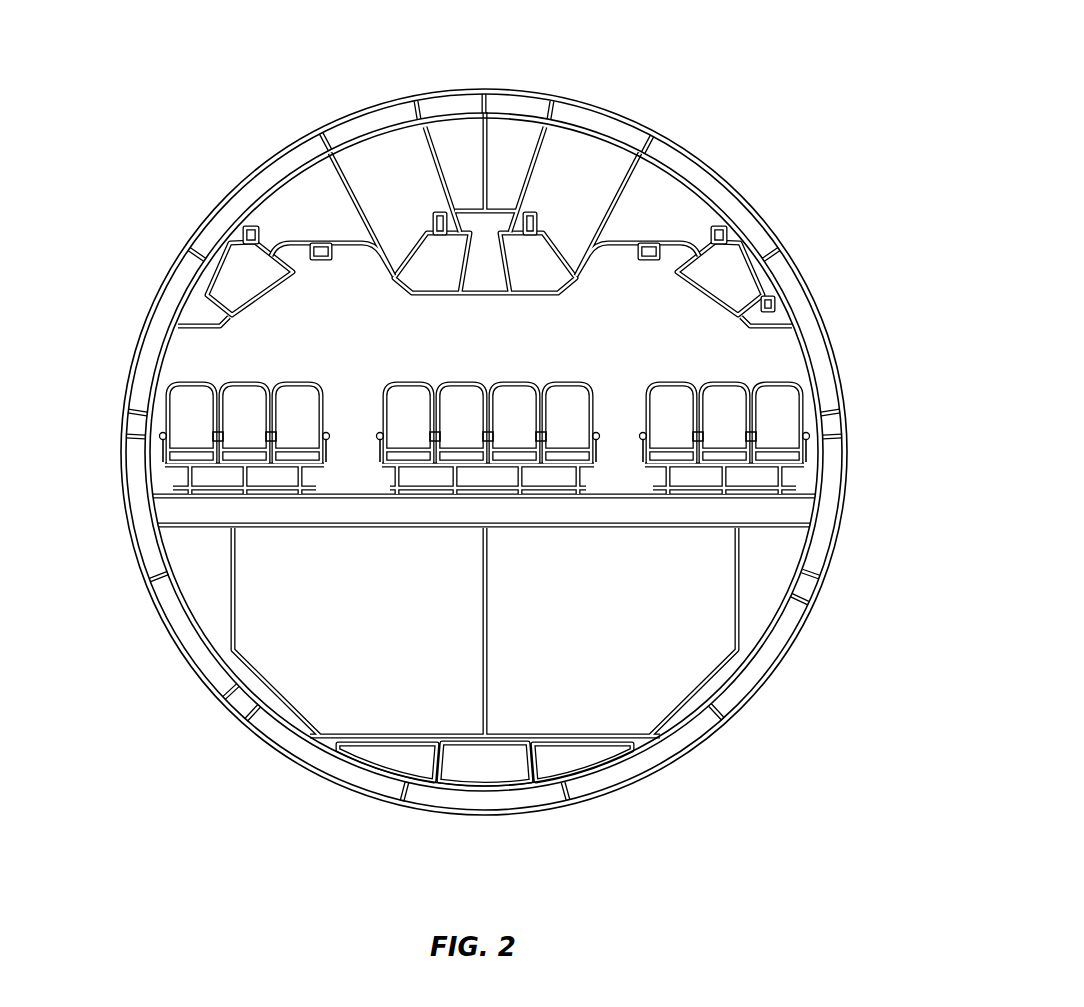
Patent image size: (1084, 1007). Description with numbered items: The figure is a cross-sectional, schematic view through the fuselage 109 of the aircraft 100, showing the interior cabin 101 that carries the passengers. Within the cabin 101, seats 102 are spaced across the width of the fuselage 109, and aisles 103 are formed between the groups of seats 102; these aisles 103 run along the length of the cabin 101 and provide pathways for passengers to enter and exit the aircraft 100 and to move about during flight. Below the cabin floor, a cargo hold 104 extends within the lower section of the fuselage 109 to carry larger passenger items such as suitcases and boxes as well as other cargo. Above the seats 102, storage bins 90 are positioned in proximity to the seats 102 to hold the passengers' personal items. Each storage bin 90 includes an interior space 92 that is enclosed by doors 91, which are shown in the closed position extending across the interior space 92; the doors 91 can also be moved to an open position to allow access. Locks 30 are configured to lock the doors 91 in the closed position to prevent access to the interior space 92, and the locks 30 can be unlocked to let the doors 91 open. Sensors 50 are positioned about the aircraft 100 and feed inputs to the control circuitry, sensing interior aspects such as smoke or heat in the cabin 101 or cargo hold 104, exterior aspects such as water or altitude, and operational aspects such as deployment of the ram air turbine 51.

The aircraft 100 is at (499, 414).
The lock 30 is at (439, 214).
The sensor 50 is at (320, 250).
The ram air turbine 51 is at (800, 598).
The storage bin 90 is at (233, 279).
The door 91 is at (266, 300).
The interior space 92 is at (430, 250).
The interior cabin 101 is at (245, 348).
The seat 102 is at (247, 398).
The aisle 103 is at (622, 448).
The cargo hold 104 is at (357, 634).
The fuselage 109 is at (800, 268).